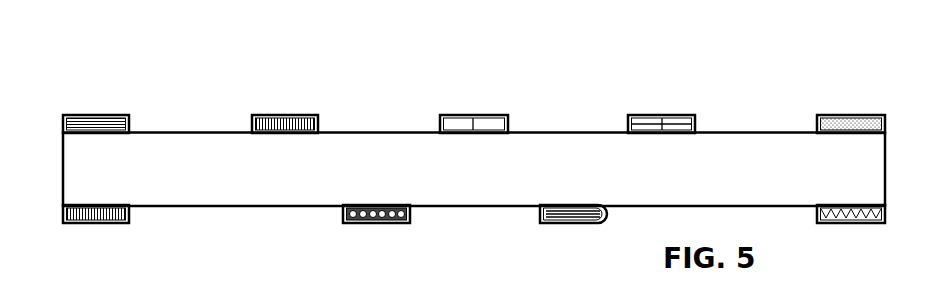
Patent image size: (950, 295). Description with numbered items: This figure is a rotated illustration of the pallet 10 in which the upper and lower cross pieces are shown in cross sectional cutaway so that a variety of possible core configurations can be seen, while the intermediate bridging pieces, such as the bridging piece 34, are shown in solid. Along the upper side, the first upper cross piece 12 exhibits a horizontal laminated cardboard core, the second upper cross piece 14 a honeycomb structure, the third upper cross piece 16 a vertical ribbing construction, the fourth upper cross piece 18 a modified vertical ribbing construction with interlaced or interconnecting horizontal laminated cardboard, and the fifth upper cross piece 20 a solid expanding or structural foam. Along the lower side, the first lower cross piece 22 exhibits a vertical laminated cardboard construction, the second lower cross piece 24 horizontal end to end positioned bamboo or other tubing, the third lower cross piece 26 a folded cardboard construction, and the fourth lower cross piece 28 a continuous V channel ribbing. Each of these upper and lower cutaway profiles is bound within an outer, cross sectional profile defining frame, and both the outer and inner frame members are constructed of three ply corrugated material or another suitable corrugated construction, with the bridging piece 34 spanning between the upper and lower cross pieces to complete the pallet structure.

The pallet 10 is at (77, 73).
The first upper cross piece 12 is at (93, 120).
The second upper cross piece 14 is at (277, 119).
The third upper cross piece 16 is at (485, 119).
The fourth upper cross piece 18 is at (672, 124).
The fifth upper cross piece 20 is at (845, 122).
The first lower cross piece 22 is at (93, 216).
The second lower cross piece 24 is at (372, 214).
The third lower cross piece 26 is at (577, 215).
The fourth lower cross piece 28 is at (842, 217).
The intermediate bridging piece 34 is at (70, 173).